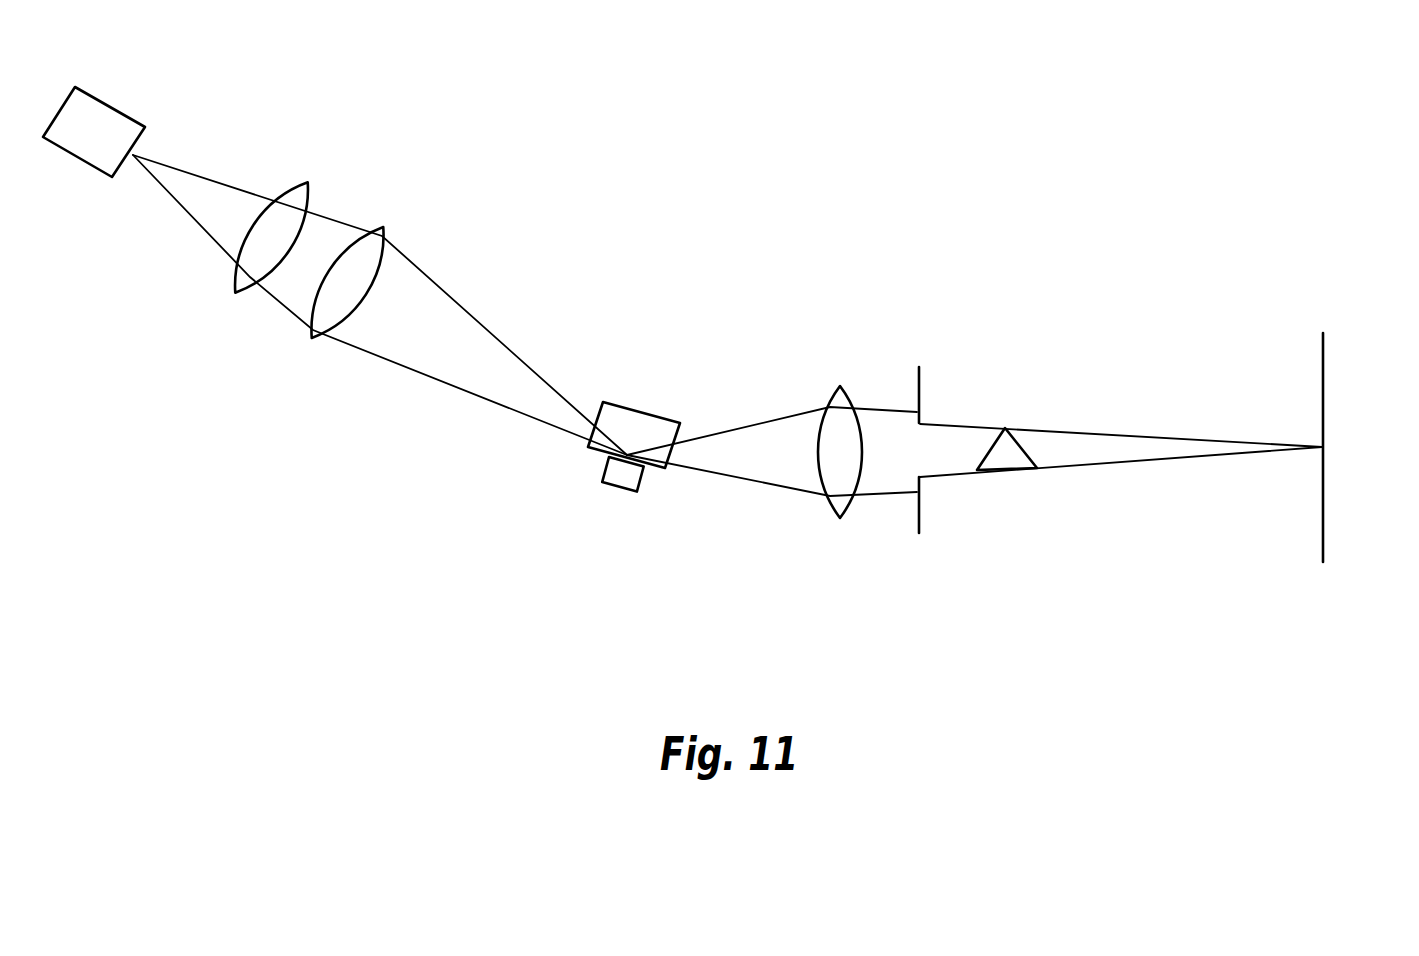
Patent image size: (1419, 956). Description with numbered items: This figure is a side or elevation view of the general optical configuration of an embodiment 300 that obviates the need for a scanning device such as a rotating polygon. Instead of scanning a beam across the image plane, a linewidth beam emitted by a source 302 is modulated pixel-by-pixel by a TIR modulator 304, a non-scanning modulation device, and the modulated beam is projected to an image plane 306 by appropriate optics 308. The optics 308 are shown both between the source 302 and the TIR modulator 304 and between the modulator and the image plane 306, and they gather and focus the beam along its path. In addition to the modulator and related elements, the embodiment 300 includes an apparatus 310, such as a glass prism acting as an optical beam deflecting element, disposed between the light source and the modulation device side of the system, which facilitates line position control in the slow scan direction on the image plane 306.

The embodiment 300 is at (836, 180).
The source 302 is at (113, 110).
The TIR modulator 304 is at (643, 413).
The image plane 306 is at (1323, 367).
The optics 308 is at (307, 378).
The apparatus 310 is at (1010, 470).